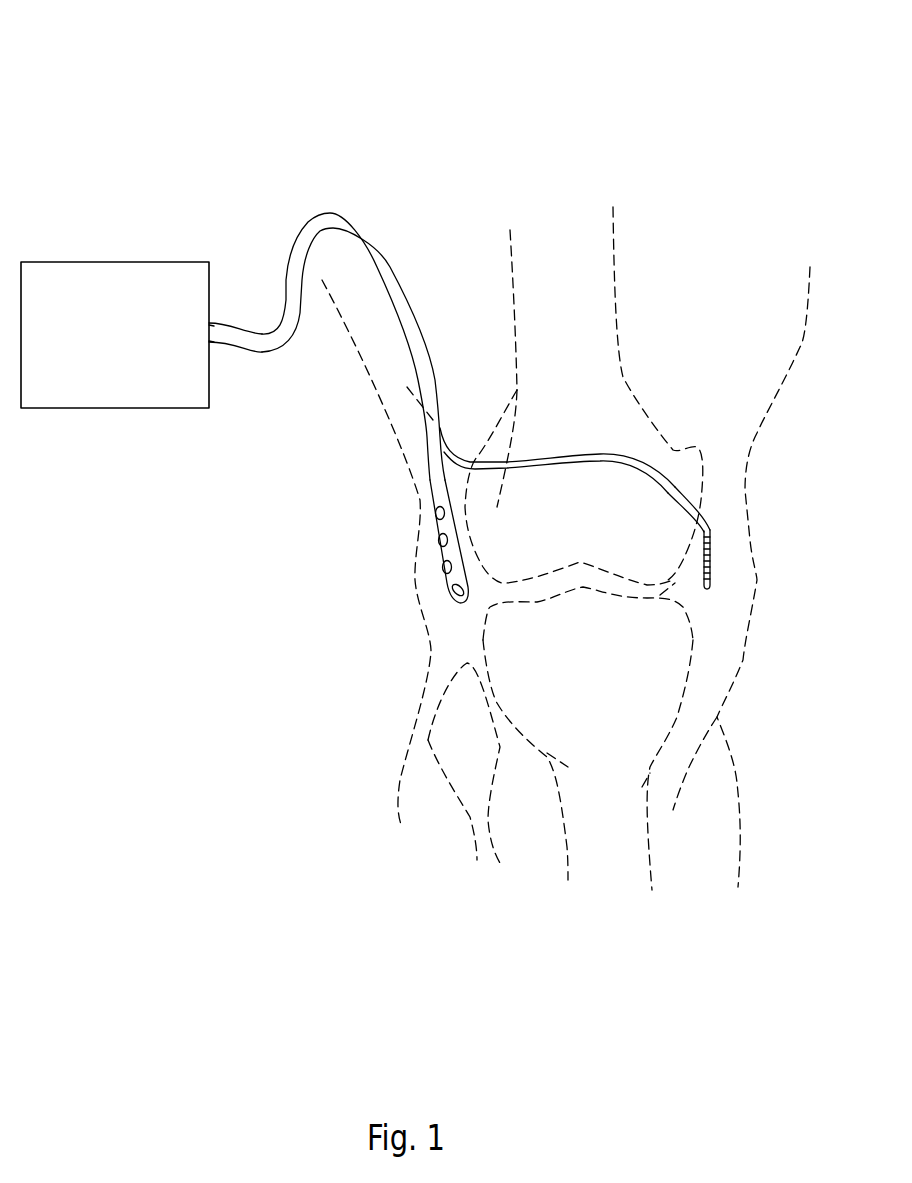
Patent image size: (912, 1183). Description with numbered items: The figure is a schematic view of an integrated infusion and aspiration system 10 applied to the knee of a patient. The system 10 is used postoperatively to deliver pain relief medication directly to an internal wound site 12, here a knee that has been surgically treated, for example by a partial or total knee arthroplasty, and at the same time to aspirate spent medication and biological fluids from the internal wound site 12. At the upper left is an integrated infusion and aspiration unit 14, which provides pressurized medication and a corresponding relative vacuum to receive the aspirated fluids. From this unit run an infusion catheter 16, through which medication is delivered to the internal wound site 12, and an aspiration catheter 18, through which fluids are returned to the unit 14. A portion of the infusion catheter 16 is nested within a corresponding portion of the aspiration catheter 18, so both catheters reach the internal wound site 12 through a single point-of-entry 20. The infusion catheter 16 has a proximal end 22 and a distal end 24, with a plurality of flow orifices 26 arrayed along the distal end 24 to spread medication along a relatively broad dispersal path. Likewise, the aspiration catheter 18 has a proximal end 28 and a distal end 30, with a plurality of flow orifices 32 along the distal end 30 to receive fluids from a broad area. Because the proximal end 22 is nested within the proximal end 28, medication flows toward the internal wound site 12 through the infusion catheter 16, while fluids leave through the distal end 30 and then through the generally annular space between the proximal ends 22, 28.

The integrated infusion and aspiration system 10 is at (252, 108).
The internal wound site 12 is at (662, 785).
The integrated infusion and aspiration unit 14 is at (115, 335).
The infusion catheter 16 is at (716, 516).
The aspiration catheter 18 is at (377, 205).
The single point-of-entry 20 is at (445, 397).
The proximal end of the infusion catheter 22 is at (219, 348).
The distal end of the infusion catheter 24 is at (759, 584).
The flow orifices of the infusion catheter 26 is at (712, 533).
The proximal end of the aspiration catheter 28 is at (222, 326).
The distal end of the aspiration catheter 30 is at (388, 574).
The flow orifices of the aspiration catheter 32 is at (433, 513).